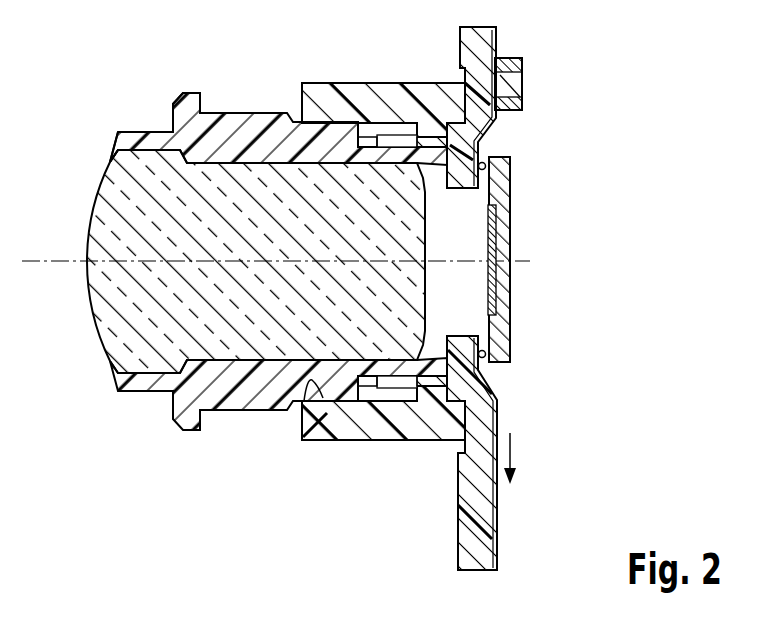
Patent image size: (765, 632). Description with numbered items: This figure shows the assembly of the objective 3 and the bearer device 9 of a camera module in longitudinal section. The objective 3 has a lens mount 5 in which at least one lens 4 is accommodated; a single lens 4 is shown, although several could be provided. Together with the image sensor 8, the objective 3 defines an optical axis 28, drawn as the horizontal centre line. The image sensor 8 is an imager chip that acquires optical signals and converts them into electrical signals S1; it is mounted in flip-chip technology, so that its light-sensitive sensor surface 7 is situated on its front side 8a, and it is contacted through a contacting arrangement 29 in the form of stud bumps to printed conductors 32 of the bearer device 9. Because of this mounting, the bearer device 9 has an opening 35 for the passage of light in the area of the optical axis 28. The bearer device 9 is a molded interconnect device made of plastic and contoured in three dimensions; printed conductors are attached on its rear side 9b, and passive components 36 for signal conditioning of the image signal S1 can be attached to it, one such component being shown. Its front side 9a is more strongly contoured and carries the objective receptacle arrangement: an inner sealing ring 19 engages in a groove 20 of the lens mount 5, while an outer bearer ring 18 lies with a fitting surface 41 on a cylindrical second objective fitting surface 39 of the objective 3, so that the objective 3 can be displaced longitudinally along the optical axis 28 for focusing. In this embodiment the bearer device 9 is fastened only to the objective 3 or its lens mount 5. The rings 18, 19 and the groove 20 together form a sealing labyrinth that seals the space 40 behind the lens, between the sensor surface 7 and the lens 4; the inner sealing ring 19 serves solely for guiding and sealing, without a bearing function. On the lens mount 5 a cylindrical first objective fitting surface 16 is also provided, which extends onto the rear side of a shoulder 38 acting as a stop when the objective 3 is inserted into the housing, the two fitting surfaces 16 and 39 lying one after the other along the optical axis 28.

The objective 3 is at (93, 455).
The lens 4 is at (86, 258).
The lens mount 5 is at (117, 152).
The light-sensitive sensor surface 7 is at (494, 228).
The image sensor 8 is at (504, 275).
The front side of image sensor 8a is at (488, 368).
The bearer device 9 is at (480, 510).
The front side of bearer device 9a is at (387, 492).
The rear side of bearer device 9b is at (496, 30).
The first objective fitting surface 16 is at (247, 110).
The outer bearer ring 18 is at (380, 108).
The inner sealing ring 19 is at (430, 143).
The groove 20 is at (366, 140).
The optical axis 28 is at (46, 264).
The contacting arrangement 29 is at (487, 165).
The printed conductors 32 is at (490, 137).
The opening 35 is at (465, 203).
The passive components 36 is at (523, 90).
The shoulder 38 is at (188, 103).
The second objective fitting surface 39 is at (308, 385).
The space behind the lens 40 is at (460, 293).
The fitting surface of outer bearer ring 41 is at (305, 392).
The electrical signals S1 is at (513, 448).